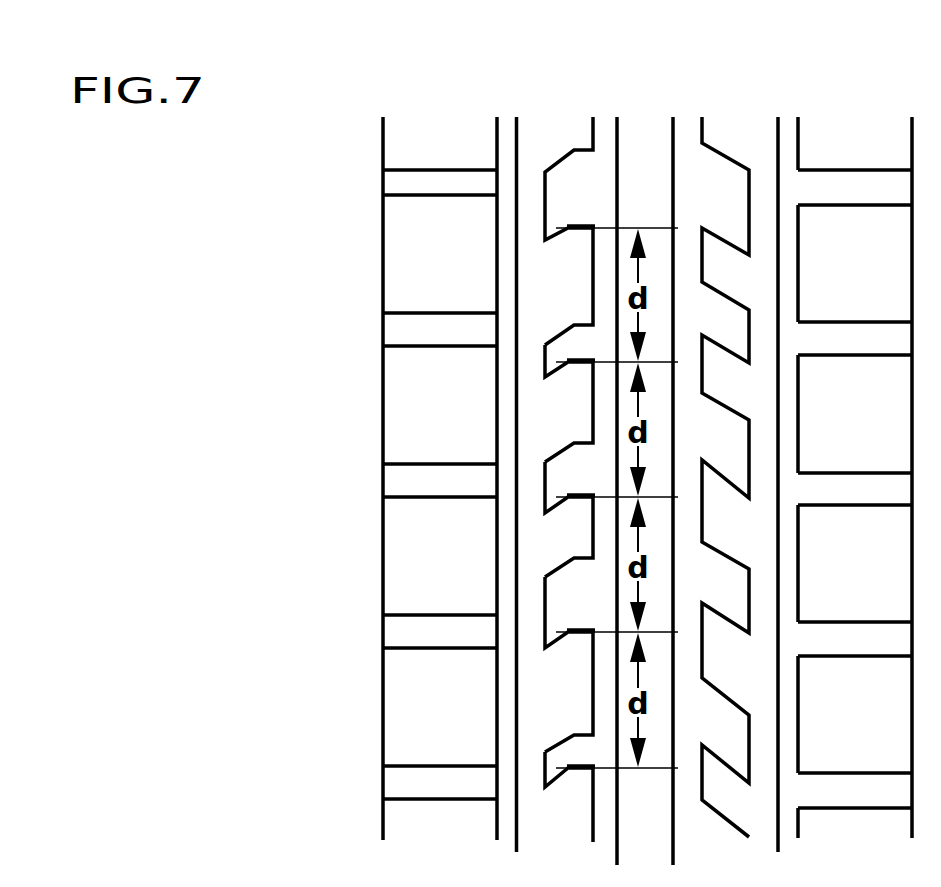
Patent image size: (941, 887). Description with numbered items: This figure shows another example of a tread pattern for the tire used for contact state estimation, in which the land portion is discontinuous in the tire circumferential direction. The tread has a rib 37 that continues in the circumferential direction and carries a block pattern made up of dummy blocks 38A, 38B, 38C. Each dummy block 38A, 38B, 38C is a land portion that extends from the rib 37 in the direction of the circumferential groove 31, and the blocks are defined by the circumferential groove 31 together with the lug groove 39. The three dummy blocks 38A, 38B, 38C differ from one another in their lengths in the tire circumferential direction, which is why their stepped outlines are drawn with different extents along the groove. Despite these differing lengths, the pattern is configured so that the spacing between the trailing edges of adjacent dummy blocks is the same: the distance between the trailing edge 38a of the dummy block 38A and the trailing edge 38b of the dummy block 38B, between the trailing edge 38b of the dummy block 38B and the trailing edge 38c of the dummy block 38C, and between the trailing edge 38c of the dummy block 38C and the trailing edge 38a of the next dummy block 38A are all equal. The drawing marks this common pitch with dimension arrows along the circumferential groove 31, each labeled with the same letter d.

The circumferential groove 31 is at (608, 120).
The rib 37 is at (532, 275).
The lug groove 39 is at (567, 182).
The dummy block 38A is at (573, 408).
The dummy block 38B is at (571, 522).
The dummy block 38C is at (571, 690).
The trailing edge 38a is at (566, 360).
The trailing edge 38b is at (577, 488).
The trailing edge 38c is at (569, 633).